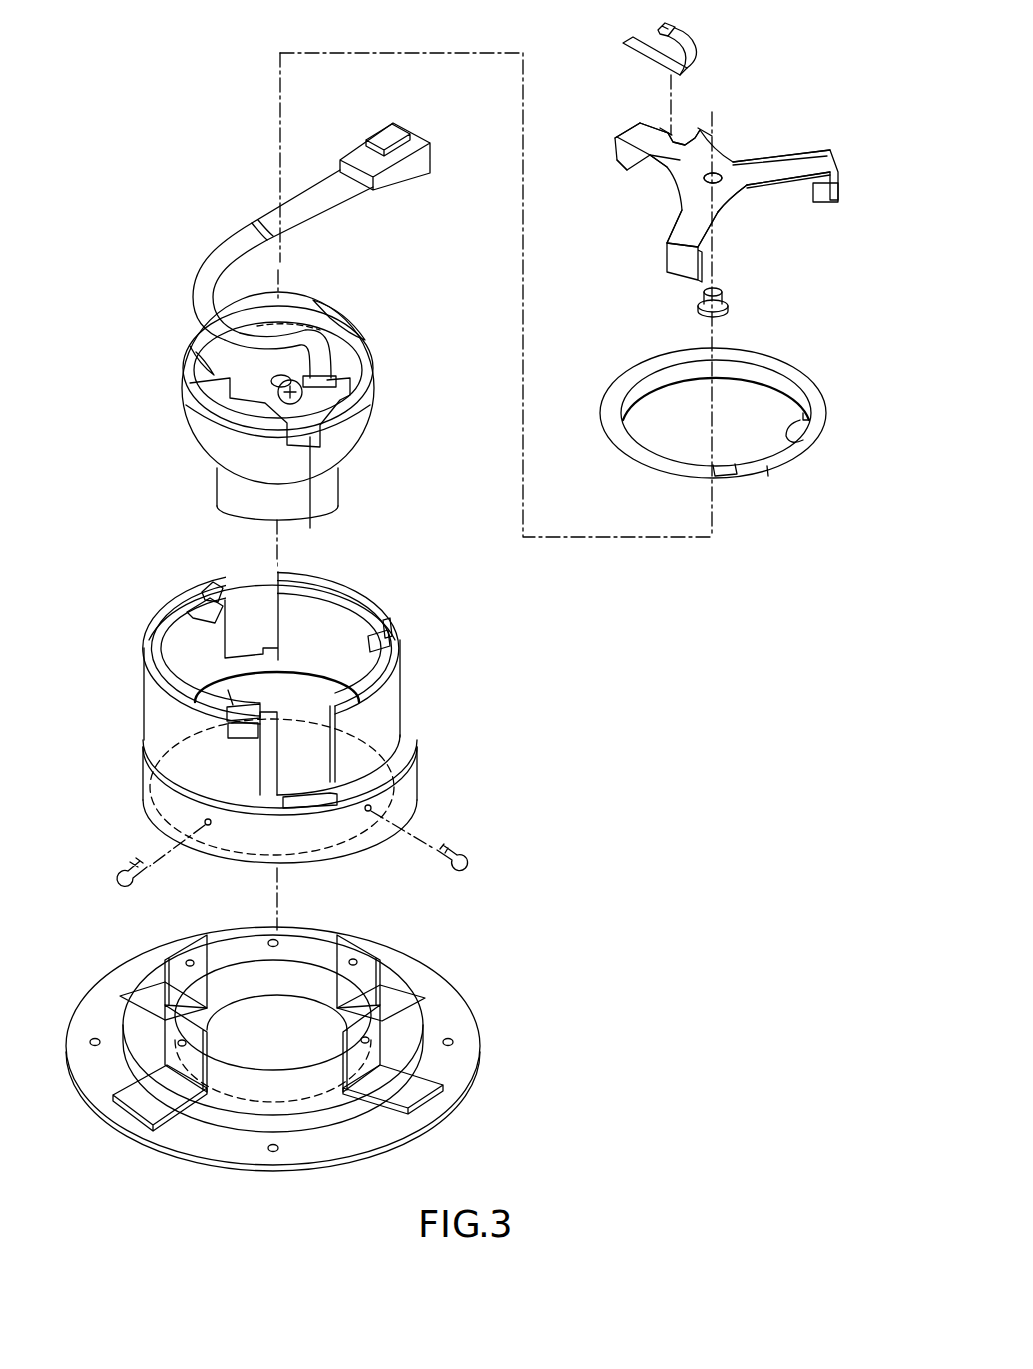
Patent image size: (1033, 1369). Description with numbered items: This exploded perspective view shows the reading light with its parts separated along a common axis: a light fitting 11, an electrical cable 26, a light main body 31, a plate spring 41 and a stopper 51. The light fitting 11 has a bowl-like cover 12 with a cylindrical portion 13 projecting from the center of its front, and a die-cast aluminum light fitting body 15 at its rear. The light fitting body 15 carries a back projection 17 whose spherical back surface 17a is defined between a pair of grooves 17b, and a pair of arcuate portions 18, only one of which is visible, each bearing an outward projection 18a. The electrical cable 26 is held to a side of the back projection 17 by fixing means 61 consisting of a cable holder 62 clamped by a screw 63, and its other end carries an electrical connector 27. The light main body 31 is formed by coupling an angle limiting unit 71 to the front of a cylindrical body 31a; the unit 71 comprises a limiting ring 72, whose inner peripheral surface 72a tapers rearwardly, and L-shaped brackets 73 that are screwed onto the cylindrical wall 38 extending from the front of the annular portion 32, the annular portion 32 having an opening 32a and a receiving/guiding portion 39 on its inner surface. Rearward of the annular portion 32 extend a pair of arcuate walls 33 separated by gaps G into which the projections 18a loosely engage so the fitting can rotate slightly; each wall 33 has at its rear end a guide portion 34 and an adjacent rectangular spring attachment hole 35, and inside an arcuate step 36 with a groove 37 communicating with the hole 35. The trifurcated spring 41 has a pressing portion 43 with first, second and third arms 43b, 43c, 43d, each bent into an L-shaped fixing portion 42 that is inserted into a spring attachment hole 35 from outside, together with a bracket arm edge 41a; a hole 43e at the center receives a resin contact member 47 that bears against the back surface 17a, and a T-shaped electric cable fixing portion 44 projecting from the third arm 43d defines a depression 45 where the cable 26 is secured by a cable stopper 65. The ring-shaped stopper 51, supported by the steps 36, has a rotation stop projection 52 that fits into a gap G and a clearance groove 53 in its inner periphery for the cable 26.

The light fitting 11 is at (388, 370).
The cover 12 is at (342, 468).
The cylindrical portion 13 is at (320, 500).
The light fitting body 15 is at (304, 294).
The back projection 17 is at (223, 386).
The back surface 17a is at (262, 302).
The grooves 17b is at (345, 318).
The arcuate portions 18 is at (240, 437).
The projections 18a is at (310, 528).
The electrical cable 26 is at (248, 222).
The electrical connector 27 is at (408, 170).
The light main body 31 is at (140, 676).
The cylindrical body 31a is at (146, 744).
The annular portion 32 is at (256, 810).
The opening 32a is at (300, 675).
The arcuate walls 33 is at (170, 722).
The guide portion 34 is at (203, 590).
The spring attachment hole 35 is at (244, 740).
The arcuate steps 36 is at (170, 640).
The groove 37 is at (203, 622).
The cylindrical wall 38 is at (172, 810).
The receiving/guiding portion 39 is at (237, 708).
The spring 41 is at (672, 186).
The bracket arm edge 41a is at (723, 207).
The fixing portions 42 is at (618, 165).
The pressing portion 43 is at (733, 165).
The first arm 43b is at (690, 227).
The second arm 43c is at (788, 165).
The third arm 43d is at (680, 160).
The hole 43e is at (722, 180).
The electric cable fixing portion 44 is at (685, 134).
The depression 45 is at (668, 128).
The contact member 47 is at (728, 302).
The stopper 51 is at (790, 370).
The rotation stop projection 52 is at (757, 480).
The clearance groove 53 is at (805, 433).
The fixing means 61 is at (434, 385).
The cable holder 62 is at (302, 392).
The screw 63 is at (325, 410).
The cable stopper 65 is at (700, 46).
The angle limiting unit 71 is at (315, 930).
The limiting ring 72 is at (196, 1148).
The inner peripheral surface 72a is at (232, 965).
The brackets 73 is at (175, 1030).
The gaps G is at (250, 610).